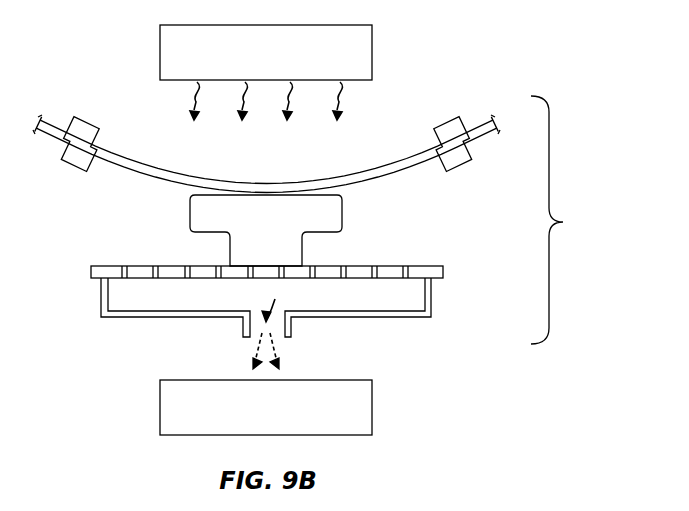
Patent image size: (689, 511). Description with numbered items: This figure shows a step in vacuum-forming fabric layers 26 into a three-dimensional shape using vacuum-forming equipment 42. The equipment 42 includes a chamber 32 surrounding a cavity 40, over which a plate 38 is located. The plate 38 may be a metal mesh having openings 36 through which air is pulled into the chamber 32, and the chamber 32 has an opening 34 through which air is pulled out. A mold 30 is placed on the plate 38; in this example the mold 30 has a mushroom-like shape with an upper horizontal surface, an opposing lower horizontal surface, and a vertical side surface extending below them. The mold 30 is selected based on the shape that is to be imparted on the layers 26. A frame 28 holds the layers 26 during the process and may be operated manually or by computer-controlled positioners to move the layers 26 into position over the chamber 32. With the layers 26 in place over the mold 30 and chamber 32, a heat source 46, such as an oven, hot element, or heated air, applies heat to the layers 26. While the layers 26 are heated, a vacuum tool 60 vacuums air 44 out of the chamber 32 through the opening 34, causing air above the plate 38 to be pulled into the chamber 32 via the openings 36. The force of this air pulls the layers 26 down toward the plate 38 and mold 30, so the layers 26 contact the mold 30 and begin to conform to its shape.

The layers 26 is at (135, 163).
The frame 28 is at (70, 166).
The mold 30 is at (342, 206).
The chamber 32 is at (431, 296).
The opening 34 is at (274, 302).
The openings 36 is at (188, 279).
The plate 38 is at (443, 268).
The cavity 40 is at (372, 302).
The vacuum-forming equipment 42 is at (558, 220).
The air 44 is at (280, 351).
The heat source 46 is at (372, 50).
The vacuum tool 60 is at (372, 405).